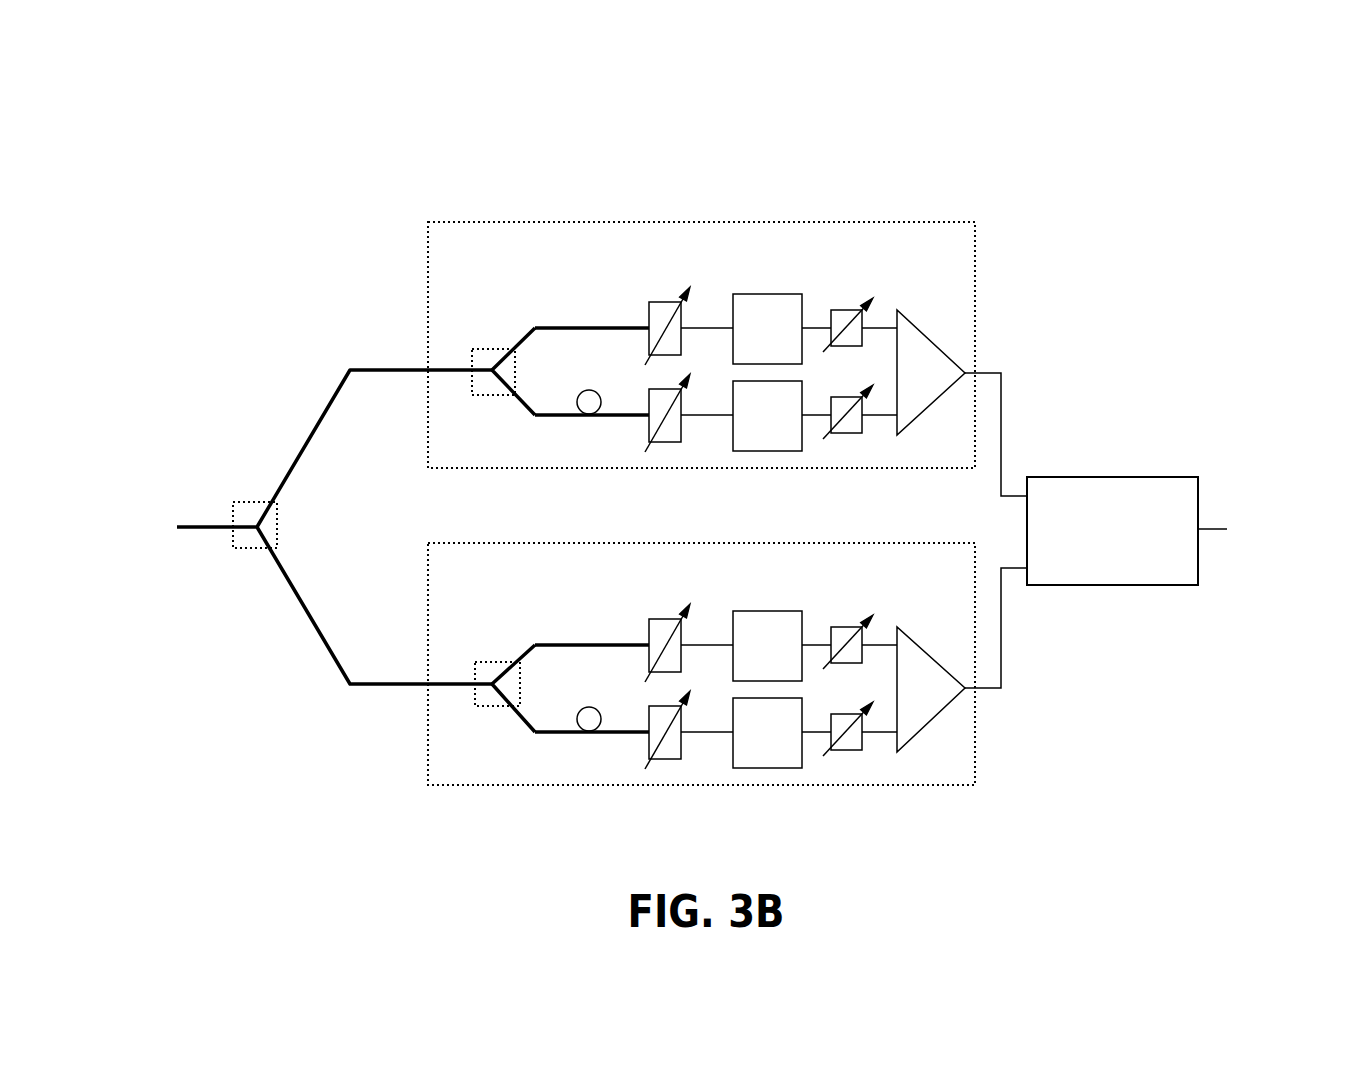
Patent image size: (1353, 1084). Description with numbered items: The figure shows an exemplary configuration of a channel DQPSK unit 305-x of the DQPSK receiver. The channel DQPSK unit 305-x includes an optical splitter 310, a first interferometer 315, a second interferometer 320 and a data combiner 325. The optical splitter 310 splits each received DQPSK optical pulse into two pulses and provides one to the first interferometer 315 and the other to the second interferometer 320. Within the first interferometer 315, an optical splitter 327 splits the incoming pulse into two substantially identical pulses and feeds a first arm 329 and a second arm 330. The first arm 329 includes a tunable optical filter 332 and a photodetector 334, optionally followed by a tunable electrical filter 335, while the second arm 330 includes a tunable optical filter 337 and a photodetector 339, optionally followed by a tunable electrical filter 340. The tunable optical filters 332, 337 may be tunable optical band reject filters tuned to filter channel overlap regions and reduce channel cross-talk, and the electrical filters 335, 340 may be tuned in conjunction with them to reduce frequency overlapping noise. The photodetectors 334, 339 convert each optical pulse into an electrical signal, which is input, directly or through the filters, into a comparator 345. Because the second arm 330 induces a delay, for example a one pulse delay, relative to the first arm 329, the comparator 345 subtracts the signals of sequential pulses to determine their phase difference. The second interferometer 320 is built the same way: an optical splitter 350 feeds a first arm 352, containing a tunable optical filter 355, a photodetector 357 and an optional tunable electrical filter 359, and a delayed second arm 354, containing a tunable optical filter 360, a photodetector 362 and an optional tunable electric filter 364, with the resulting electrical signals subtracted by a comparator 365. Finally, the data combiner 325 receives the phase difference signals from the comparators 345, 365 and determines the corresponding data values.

The channel DQPSK unit 305-x is at (291, 181).
The optical splitter 310 is at (235, 502).
The first interferometer 315 is at (457, 222).
The second interferometer 320 is at (455, 543).
The data combiner 325 is at (1120, 477).
The optical splitter 327 is at (472, 349).
The first arm 329 is at (534, 310).
The second arm 330 is at (550, 433).
The tunable optical filter 332 is at (647, 305).
The photodetector 334 is at (768, 293).
The tunable electrical filter 335 is at (850, 308).
The tunable optical filter 337 is at (647, 435).
The photodetector 339 is at (768, 452).
The tunable electrical filter 340 is at (848, 435).
The comparator 345 is at (935, 340).
The optical splitter 350 is at (475, 662).
The first arm 352 is at (552, 627).
The second arm 354 is at (560, 748).
The tunable optical filter 355 is at (647, 622).
The photodetector 357 is at (770, 608).
The tunable electrical filter 359 is at (850, 625).
The tunable optical filter 360 is at (645, 752).
The photodetector 362 is at (768, 768).
The tunable electric filter 364 is at (848, 750).
The comparator 365 is at (935, 655).